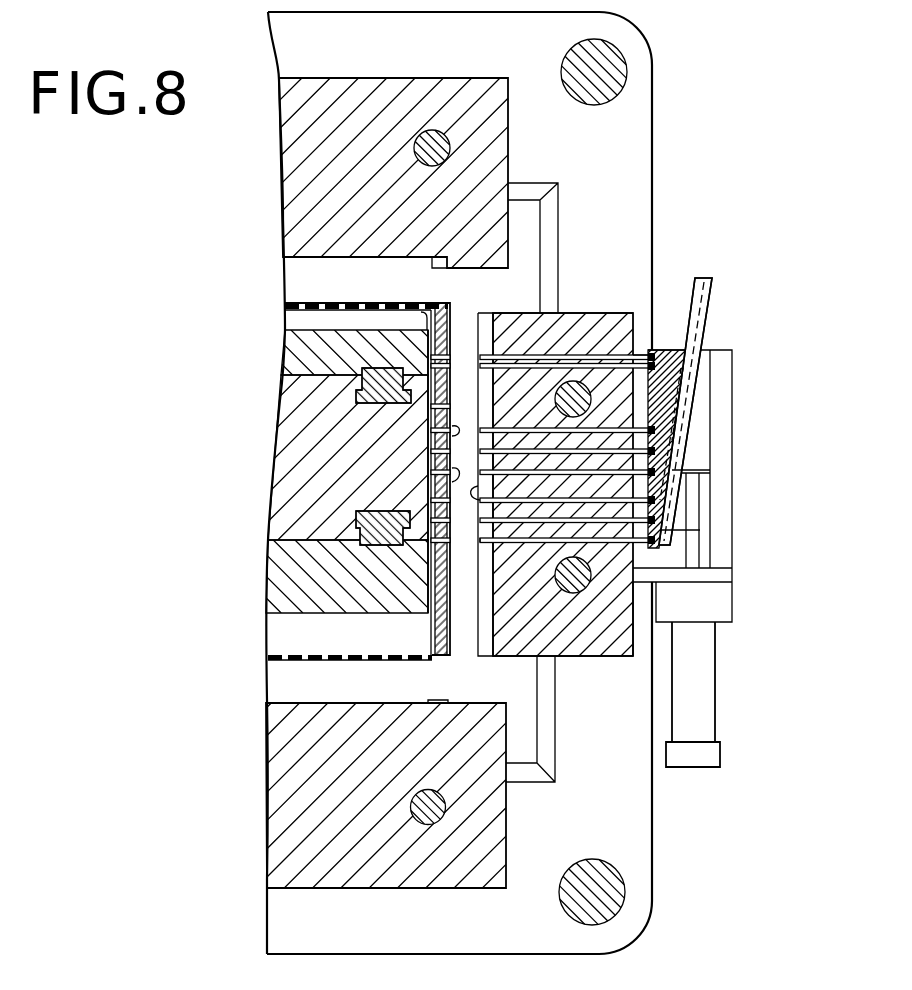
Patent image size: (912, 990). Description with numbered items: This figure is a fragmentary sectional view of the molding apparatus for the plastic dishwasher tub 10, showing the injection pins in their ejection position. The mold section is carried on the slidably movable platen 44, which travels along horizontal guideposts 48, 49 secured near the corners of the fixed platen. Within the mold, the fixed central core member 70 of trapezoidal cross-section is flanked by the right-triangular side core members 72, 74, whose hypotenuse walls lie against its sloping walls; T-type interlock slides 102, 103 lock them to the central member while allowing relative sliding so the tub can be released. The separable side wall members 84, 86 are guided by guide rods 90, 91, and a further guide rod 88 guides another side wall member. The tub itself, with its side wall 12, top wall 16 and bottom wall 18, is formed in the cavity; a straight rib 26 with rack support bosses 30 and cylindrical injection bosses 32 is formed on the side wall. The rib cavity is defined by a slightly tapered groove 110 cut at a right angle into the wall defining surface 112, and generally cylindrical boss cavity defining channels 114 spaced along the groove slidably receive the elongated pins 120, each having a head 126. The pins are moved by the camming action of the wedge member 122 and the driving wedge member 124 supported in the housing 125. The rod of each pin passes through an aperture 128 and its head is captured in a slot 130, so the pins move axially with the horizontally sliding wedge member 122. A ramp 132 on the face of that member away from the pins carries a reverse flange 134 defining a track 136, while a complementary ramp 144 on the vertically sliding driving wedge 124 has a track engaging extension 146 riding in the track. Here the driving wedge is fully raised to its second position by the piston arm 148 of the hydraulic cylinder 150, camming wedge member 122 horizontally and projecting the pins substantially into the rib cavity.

The dishwasher tub 10 is at (300, 671).
The side wall 12 is at (445, 300).
The top wall 16 is at (350, 278).
The bottom wall 18 is at (352, 662).
The straight rib 26 is at (450, 328).
The rack support boss 30 is at (452, 405).
The injection boss 32 is at (444, 482).
The movable platen 44 is at (648, 140).
The guidepost 48 is at (580, 54).
The guidepost 49 is at (592, 866).
The central core member 70 is at (292, 454).
The side core member 72 is at (276, 580).
The side core member 74 is at (290, 356).
The side wall member 84 is at (352, 88).
The side wall member 86 is at (366, 888).
The guide rod 88 is at (560, 392).
The guide rod 90 is at (432, 130).
The guide rod 91 is at (425, 825).
The T-type interlock slide 102 is at (360, 390).
The T-type interlock slide 103 is at (360, 526).
The tapered groove 110 is at (482, 656).
The wall defining surface 112 is at (470, 656).
The boss cavity defining channel 114 is at (478, 496).
The injection pin 120 is at (542, 530).
The wedge member 122 is at (660, 348).
The driving wedge member 124 is at (708, 336).
The housing 125 is at (734, 408).
The pin head 126 is at (650, 552).
The aperture 128 is at (642, 372).
The slot 130 is at (658, 458).
The ramp 132 is at (662, 478).
The reverse flange 134 is at (672, 500).
The track 136 is at (668, 530).
The ramp 144 is at (692, 298).
The track engaging extension 146 is at (706, 294).
The piston arm 148 is at (694, 553).
The hydraulic cylinder 150 is at (708, 724).